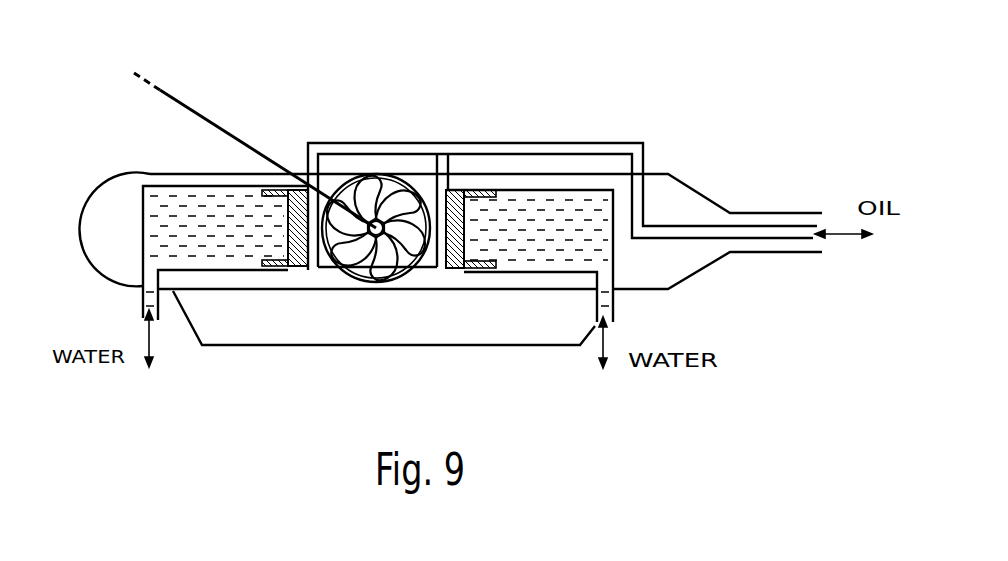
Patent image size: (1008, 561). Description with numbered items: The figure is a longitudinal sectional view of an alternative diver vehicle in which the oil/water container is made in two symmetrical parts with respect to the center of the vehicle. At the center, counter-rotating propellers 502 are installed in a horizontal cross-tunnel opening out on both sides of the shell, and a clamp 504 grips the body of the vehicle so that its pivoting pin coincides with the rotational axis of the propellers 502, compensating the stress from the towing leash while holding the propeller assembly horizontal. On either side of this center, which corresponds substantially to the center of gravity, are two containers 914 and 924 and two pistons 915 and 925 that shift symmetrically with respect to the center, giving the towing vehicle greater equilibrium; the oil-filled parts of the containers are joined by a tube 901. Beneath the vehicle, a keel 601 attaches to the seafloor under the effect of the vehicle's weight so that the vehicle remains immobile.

The container 924 is at (187, 208).
The piston 925 is at (296, 190).
The tube 901 is at (368, 147).
The counter-rotating propellers 502 is at (400, 198).
The clamp 504 is at (193, 108).
The piston 915 is at (455, 192).
The container 914 is at (543, 210).
The keel 601 is at (500, 348).